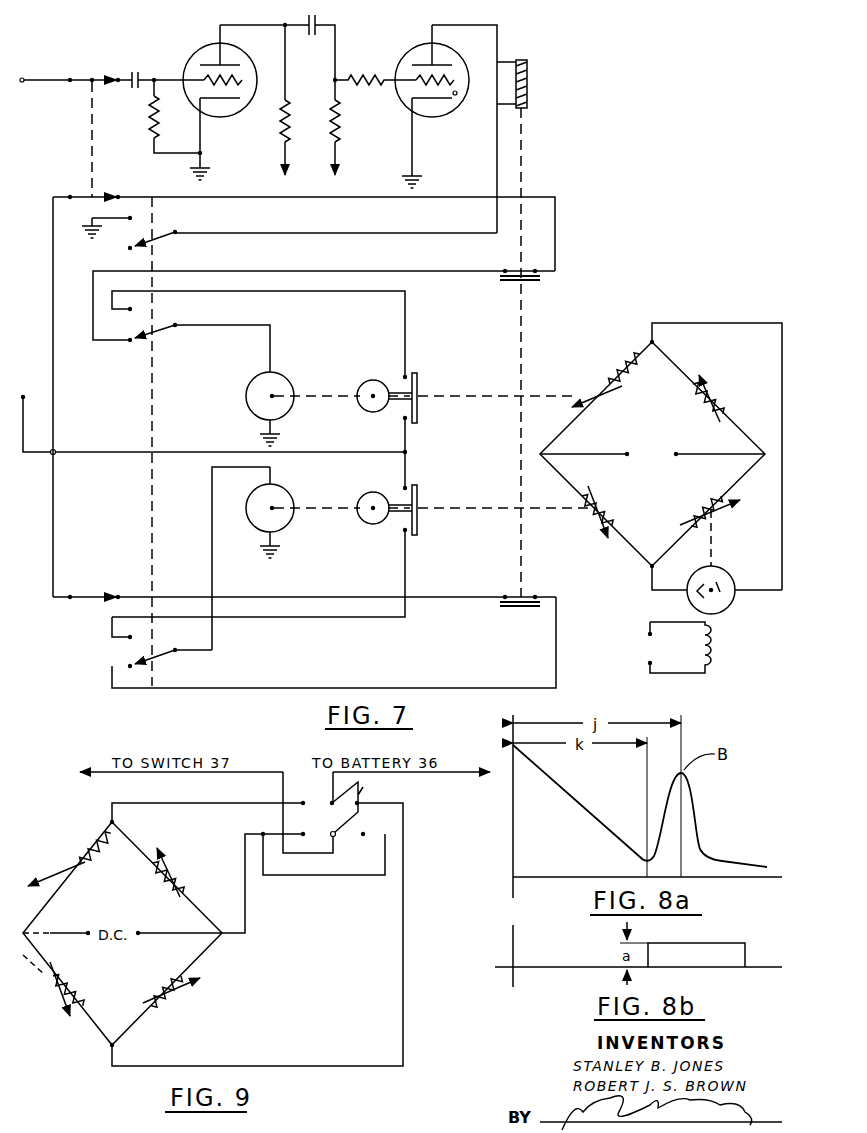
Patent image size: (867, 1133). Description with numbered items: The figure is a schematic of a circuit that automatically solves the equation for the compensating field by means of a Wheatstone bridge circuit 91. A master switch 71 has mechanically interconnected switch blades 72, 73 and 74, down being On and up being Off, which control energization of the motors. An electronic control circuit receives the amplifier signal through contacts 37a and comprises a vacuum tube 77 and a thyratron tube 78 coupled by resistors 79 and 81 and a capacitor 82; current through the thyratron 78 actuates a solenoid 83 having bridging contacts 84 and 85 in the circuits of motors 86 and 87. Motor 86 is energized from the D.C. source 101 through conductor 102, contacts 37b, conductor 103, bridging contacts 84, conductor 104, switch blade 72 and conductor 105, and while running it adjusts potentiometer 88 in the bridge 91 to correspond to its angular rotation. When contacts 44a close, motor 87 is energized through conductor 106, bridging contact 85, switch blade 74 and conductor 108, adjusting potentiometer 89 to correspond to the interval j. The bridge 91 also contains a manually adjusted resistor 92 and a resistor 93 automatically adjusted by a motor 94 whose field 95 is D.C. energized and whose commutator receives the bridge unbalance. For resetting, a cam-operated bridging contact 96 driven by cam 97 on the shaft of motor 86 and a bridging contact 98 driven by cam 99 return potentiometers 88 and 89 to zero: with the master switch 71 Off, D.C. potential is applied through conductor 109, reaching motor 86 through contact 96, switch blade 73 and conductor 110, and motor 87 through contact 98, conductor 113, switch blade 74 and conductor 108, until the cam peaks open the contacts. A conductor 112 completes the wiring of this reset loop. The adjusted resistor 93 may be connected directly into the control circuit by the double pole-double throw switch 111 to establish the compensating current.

In FIG. 7, the contacts of switch 37 37a is at (90, 84).
In FIG. 7, the contacts of switch 37 37b is at (88, 194).
In FIG. 7, the master switch 71 is at (154, 408).
In FIG. 7, the switch blade 72 is at (170, 236).
In FIG. 7, the switch blade 73 is at (168, 330).
In FIG. 7, the switch blade 74 is at (168, 655).
In FIG. 7, the vacuum tube 77 is at (234, 112).
In FIG. 7, the thyratron tube 78 is at (445, 112).
In FIG. 7, the resistor 79 is at (292, 128).
In FIG. 7, the resistor 81 is at (345, 128).
In FIG. 7, the capacitor 82 is at (313, 18).
In FIG. 7, the solenoid 83 is at (528, 72).
In FIG. 7, the bridging contact 84 is at (537, 282).
In FIG. 7, the bridging contact 85 is at (524, 598).
In FIG. 7, the motor 86 is at (284, 376).
In FIG. 7, the motor 87 is at (290, 486).
In FIG. 7, the adjustable potentiometer 88 is at (598, 386).
In FIG. 7, the adjustable potentiometer 89 is at (598, 520).
In FIG. 7, the Wheatstone bridge circuit 91 is at (660, 427).
In FIG. 7, the adjustable resistor 92 is at (708, 386).
In FIG. 9, the adjustable resistor 92 is at (167, 862).
In FIG. 7, the adjustable resistor 93 is at (720, 516).
In FIG. 9, the adjustable resistor 93 is at (180, 990).
In FIG. 7, the motor 94 is at (728, 572).
In FIG. 7, the motor field 95 is at (720, 648).
In FIG. 7, the cam-operated bridging contact 96 is at (418, 378).
In FIG. 7, the cam 97 is at (366, 412).
In FIG. 7, the bridging contact 98 is at (418, 490).
In FIG. 7, the cam 99 is at (368, 524).
In FIG. 7, the D.C. source 101 is at (50, 456).
In FIG. 7, the conductor 102 is at (55, 372).
In FIG. 7, the conductor 103 is at (425, 196).
In FIG. 7, the conductor 104 is at (353, 271).
In FIG. 7, the conductor 105 is at (355, 233).
In FIG. 7, the conductor 106 is at (305, 597).
In FIG. 7, the conductor 108 is at (212, 548).
In FIG. 7, the conductor 109 is at (172, 451).
In FIG. 7, the conductor 110 is at (315, 292).
In FIG. 9, the double pole-double throw switch 111 is at (359, 812).
In FIG. 7, the lead 112 is at (335, 688).
In FIG. 7, the conductor 113 is at (288, 620).
In FIG. 7, the contacts of switch 44 44a is at (83, 596).